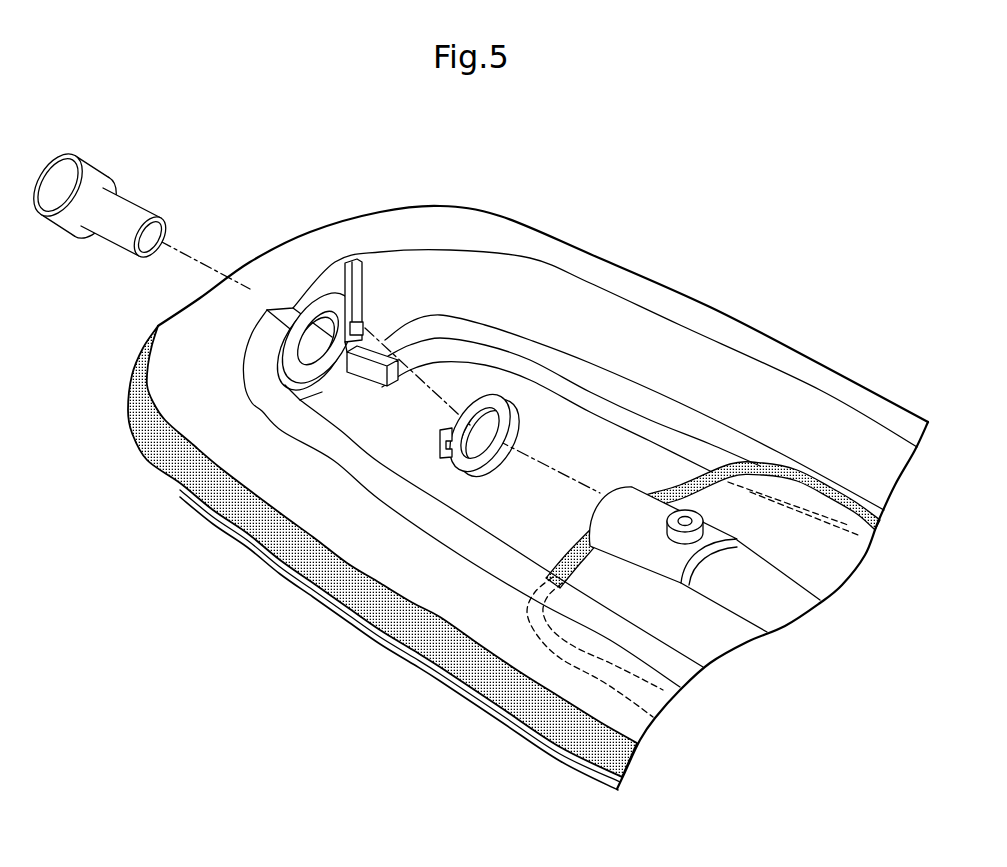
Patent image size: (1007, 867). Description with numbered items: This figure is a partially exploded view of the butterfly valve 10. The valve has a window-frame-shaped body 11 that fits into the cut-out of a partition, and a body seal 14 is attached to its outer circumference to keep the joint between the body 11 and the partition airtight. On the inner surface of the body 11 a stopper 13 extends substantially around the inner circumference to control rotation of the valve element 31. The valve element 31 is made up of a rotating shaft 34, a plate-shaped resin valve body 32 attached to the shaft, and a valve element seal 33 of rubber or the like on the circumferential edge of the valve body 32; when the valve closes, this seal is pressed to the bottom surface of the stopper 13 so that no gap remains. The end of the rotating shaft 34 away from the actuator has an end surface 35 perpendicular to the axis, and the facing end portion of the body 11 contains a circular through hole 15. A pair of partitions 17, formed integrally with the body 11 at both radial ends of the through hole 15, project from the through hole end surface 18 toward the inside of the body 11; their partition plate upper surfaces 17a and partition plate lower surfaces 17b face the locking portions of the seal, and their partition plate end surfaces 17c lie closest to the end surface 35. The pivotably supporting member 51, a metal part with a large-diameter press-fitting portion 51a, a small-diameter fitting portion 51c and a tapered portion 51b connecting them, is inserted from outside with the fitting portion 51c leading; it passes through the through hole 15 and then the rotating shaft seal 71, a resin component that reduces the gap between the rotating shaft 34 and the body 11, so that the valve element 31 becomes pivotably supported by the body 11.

The butterfly valve 10 is at (528, 467).
The body 11 is at (452, 220).
The stopper 13 is at (697, 430).
The body seal 14 is at (218, 512).
The through hole 15 is at (345, 265).
The partitions 17 is at (402, 321).
The partition plate upper surfaces 17a is at (360, 320).
The partition plate lower surfaces 17b is at (353, 372).
The partition plate end surfaces 17c is at (390, 352).
The through hole end surface 18 is at (328, 297).
The valve element 31 is at (808, 466).
The valve body 32 is at (827, 580).
The valve element seal 33 is at (857, 517).
The rotating shaft 34 is at (773, 620).
The end surface 35 is at (591, 512).
The pivotably supporting member 51 is at (127, 207).
The press-fitting portion 51a is at (78, 168).
The tapered portion 51b is at (78, 232).
The fitting portion 51c is at (137, 178).
The rotating shaft seal 71 is at (500, 393).